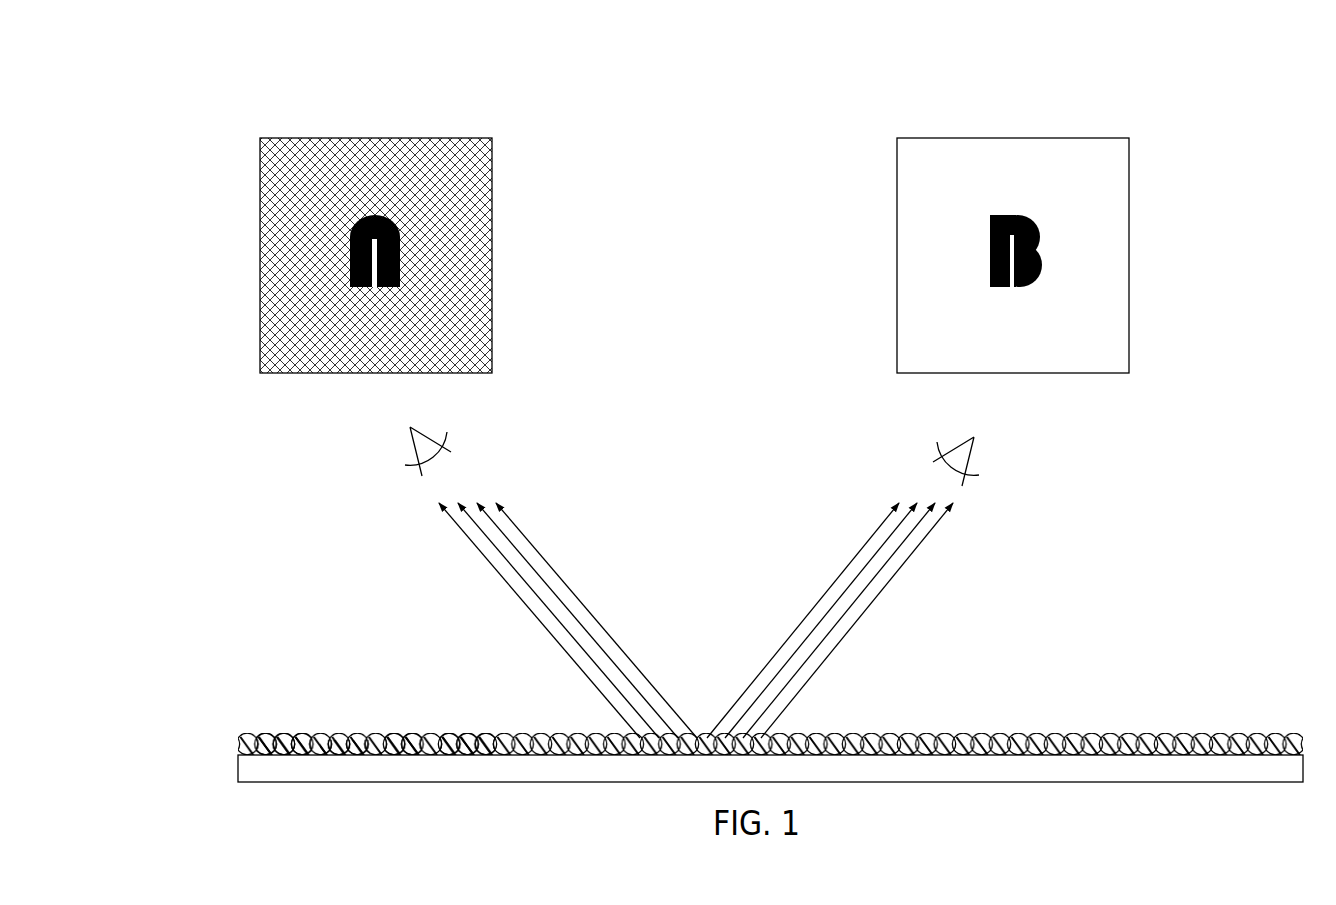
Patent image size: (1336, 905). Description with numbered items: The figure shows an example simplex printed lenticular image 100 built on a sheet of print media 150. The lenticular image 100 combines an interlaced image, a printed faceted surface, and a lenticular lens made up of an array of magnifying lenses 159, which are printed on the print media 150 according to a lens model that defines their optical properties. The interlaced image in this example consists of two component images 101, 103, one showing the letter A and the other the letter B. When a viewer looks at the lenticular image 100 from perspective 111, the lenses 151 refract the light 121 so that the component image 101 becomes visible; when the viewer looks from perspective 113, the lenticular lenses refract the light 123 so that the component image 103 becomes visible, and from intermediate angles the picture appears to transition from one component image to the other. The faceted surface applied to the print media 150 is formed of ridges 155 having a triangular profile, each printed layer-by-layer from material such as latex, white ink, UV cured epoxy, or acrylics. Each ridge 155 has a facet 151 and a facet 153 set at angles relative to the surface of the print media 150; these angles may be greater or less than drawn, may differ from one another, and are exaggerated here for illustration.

The lenticular image 100 is at (183, 75).
The component image 101 is at (260, 200).
The component image 103 is at (897, 203).
The perspective 111 is at (405, 465).
The perspective 113 is at (968, 472).
The light 121 is at (541, 538).
The light 123 is at (851, 538).
The print media 150 is at (238, 766).
The facet 151 is at (417, 738).
The facet 153 is at (447, 738).
The ridges 155 is at (332, 748).
The magnifying lenses 159 is at (303, 735).